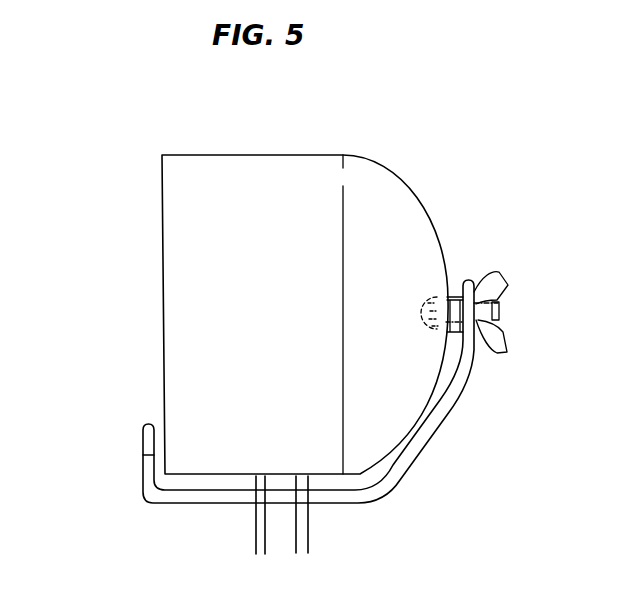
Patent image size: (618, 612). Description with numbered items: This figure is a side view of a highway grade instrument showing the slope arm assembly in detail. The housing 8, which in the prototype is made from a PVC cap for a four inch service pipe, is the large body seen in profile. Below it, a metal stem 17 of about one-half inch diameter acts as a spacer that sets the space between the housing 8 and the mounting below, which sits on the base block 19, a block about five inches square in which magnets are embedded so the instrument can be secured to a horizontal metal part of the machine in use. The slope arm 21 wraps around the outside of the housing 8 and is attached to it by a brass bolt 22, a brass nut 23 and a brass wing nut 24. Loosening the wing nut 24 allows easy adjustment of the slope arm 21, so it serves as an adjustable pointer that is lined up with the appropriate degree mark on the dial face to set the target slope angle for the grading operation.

The housing 8 is at (202, 276).
The stem 17 is at (277, 531).
The base block 19 is at (14, 363).
The slope arm 21 is at (427, 455).
The brass bolt 22 is at (413, 291).
The brass nut 23 is at (457, 293).
The brass wing nut 24 is at (492, 298).